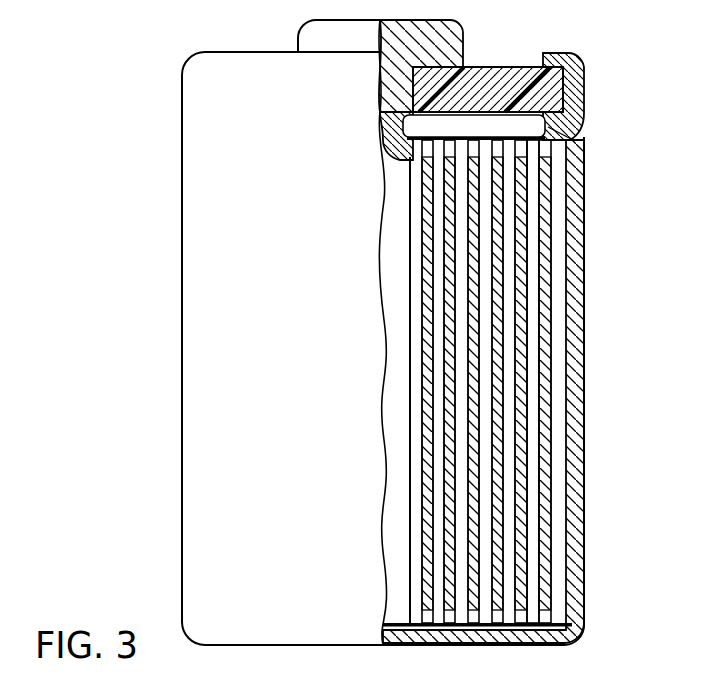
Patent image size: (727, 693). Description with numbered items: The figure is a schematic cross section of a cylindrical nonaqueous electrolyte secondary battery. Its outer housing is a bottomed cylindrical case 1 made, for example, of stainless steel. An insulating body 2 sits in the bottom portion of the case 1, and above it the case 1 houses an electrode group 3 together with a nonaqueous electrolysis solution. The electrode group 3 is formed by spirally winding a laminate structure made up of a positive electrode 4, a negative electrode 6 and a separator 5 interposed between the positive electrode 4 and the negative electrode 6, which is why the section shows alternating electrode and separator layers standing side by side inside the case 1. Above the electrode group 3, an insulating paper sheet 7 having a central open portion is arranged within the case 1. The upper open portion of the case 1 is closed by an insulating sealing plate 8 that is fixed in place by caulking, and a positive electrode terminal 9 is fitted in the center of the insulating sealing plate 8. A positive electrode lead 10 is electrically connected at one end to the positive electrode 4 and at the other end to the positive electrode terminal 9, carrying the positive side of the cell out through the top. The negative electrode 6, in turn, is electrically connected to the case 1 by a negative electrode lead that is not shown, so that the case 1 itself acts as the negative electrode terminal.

The cylindrical case 1 is at (583, 571).
The insulating body 2 is at (560, 626).
The electrode group 3 is at (629, 201).
The positive electrode 4 is at (520, 215).
The separator 5 is at (535, 253).
The negative electrode 6 is at (543, 288).
The insulating paper sheet 7 is at (573, 134).
The insulating sealing plate 8 is at (513, 84).
The positive electrode terminal 9 is at (452, 30).
The positive electrode lead 10 is at (387, 138).